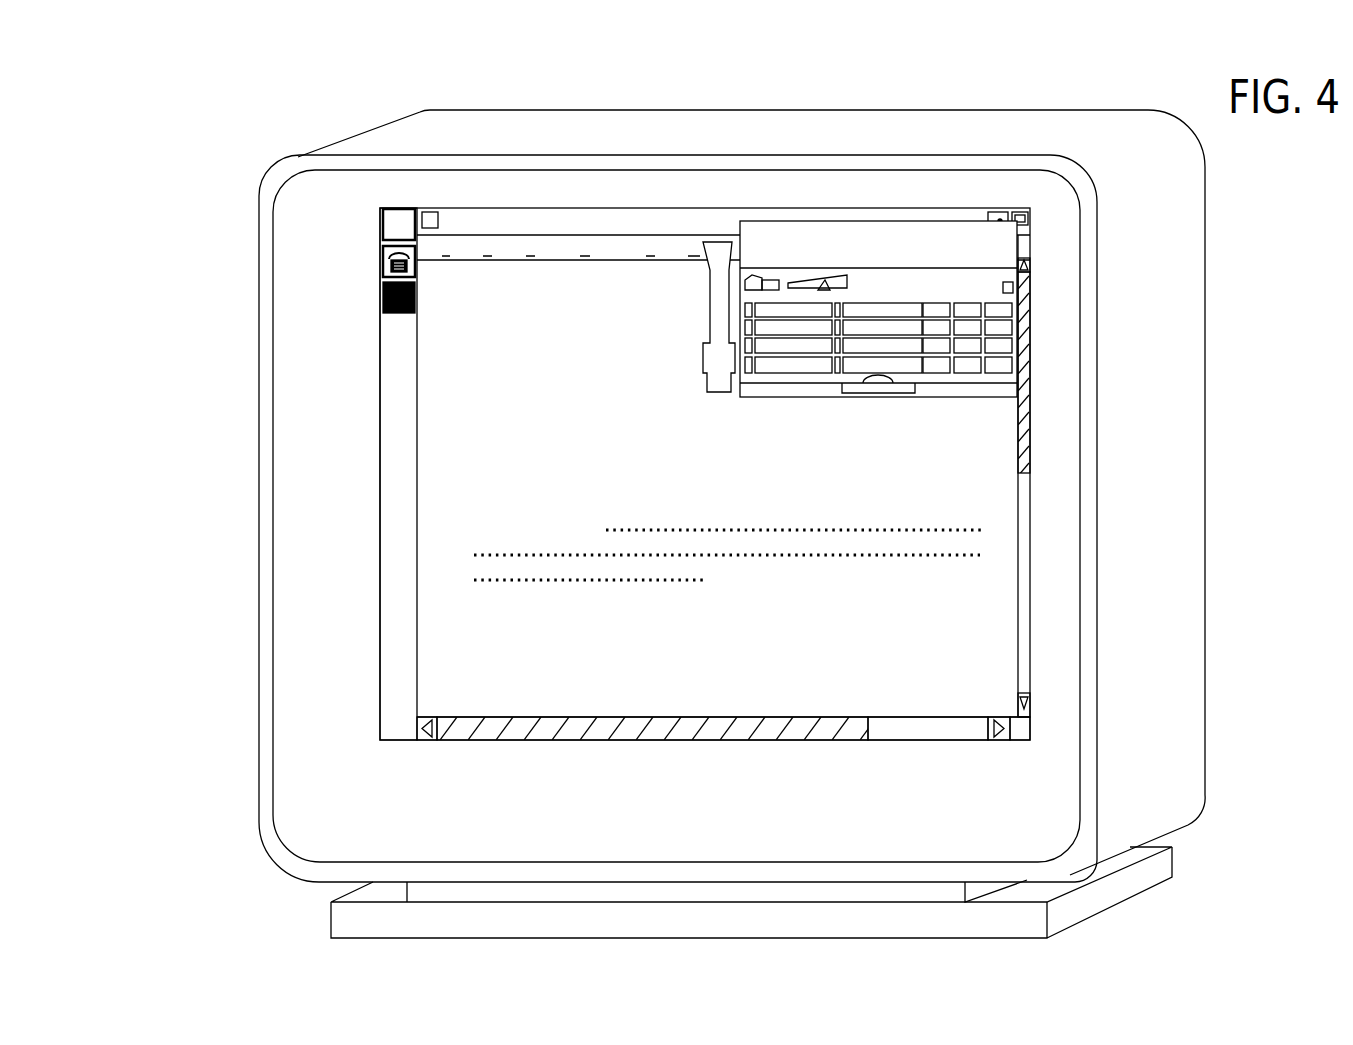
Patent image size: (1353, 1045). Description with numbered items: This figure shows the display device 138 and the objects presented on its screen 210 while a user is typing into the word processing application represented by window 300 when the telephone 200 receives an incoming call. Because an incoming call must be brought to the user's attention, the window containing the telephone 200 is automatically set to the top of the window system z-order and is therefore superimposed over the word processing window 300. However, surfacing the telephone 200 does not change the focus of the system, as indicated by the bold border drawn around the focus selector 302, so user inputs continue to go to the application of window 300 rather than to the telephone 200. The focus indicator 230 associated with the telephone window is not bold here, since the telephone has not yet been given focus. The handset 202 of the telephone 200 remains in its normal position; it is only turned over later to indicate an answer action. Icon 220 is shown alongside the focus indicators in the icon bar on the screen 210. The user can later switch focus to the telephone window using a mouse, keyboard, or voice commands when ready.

The display device 138 is at (1052, 90).
The telephone window 200 is at (1016, 294).
The handset 202 is at (720, 255).
The screen 210 is at (987, 433).
The system icon 220 is at (378, 229).
The focus indicator 230 is at (380, 265).
The word processing application window 300 is at (417, 400).
The focus selector 302 is at (380, 302).